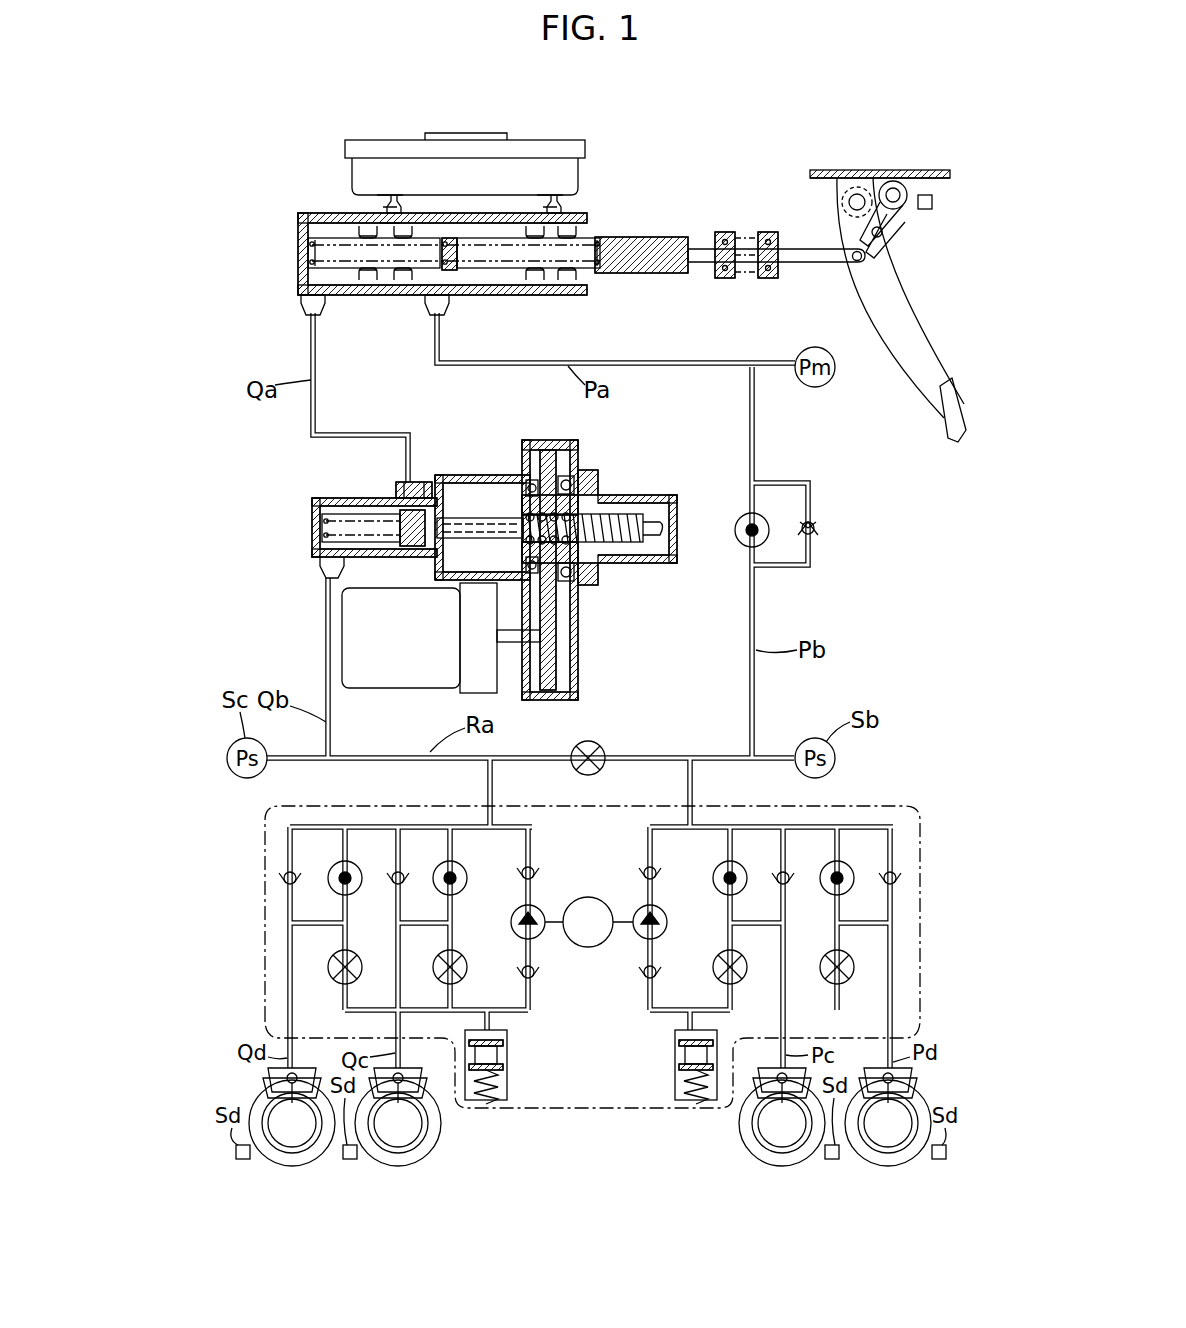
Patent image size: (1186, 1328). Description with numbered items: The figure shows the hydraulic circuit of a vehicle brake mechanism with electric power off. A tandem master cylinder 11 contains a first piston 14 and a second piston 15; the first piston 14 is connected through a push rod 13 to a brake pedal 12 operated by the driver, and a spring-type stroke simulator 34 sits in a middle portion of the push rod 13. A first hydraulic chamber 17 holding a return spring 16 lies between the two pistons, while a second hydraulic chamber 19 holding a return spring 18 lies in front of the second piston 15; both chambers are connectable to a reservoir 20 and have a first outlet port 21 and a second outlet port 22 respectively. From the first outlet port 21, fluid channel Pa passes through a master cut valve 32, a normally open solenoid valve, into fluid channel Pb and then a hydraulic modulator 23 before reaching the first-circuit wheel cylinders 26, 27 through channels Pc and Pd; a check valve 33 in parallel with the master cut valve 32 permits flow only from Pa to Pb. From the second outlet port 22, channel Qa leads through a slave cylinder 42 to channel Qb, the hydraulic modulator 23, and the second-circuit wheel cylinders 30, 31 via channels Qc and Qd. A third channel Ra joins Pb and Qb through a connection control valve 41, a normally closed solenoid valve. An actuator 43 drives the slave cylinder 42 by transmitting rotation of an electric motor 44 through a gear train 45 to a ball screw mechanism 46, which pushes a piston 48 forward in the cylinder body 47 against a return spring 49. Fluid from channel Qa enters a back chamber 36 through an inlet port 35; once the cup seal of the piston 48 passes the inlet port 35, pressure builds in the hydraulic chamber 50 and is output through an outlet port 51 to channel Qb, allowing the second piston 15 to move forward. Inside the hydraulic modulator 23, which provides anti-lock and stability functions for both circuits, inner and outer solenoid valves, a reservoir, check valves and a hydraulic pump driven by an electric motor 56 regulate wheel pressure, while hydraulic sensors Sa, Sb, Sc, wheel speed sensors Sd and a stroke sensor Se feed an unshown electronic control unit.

The tandem master cylinder 11 is at (466, 215).
The brake pedal 12 is at (896, 330).
The push rod 13 is at (810, 264).
The first piston 14 is at (638, 275).
The second piston 15 is at (448, 270).
The return spring 16 is at (597, 245).
The first hydraulic chamber 17 is at (498, 238).
The return spring 18 is at (306, 252).
The second hydraulic chamber 19 is at (332, 232).
The reservoir 20 is at (388, 170).
The first outlet port 21 is at (432, 312).
The second outlet port 22 is at (312, 310).
The hydraulic modulator 23 is at (591, 923).
The first-circuit wheel cylinder 26 is at (781, 1145).
The first-circuit wheel cylinder 27 is at (887, 1145).
The second-circuit wheel cylinder 30 is at (397, 1145).
The second-circuit wheel cylinder 31 is at (291, 1145).
The master cut valve 32 is at (742, 540).
The check valve 33 is at (815, 527).
The stroke simulator 34 is at (748, 228).
The inlet port 35 is at (388, 483).
The back chamber 36 is at (452, 478).
The connection control valve 41 is at (600, 746).
The slave cylinder 42 is at (327, 537).
The actuator 43 is at (517, 585).
The electric motor 44 is at (400, 665).
The gear train 45 is at (556, 600).
The ball screw mechanism 46 is at (600, 508).
The cylinder body 47 is at (342, 497).
The piston 48 is at (408, 542).
The return spring 49 is at (322, 526).
The hydraulic chamber 50 is at (370, 545).
The outlet port 51 is at (324, 572).
The electric motor 56 is at (590, 947).